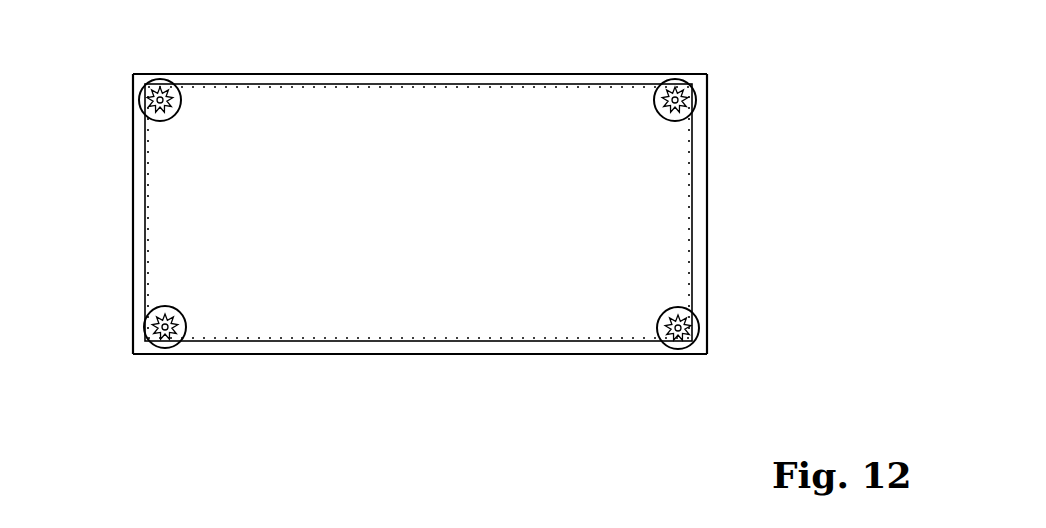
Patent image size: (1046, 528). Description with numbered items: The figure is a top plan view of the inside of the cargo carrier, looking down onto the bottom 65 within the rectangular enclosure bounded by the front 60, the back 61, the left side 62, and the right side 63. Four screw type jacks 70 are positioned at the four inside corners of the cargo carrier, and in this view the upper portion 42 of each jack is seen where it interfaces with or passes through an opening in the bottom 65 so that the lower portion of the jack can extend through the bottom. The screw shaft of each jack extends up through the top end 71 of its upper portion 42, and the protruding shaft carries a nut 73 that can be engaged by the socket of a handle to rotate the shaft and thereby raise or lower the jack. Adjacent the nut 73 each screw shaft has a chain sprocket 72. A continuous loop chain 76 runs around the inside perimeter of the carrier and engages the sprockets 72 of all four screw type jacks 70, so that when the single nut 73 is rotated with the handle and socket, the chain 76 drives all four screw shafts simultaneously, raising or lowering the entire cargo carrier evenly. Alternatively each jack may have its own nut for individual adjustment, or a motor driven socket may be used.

The upper portion 42 is at (172, 122).
The front 60 is at (398, 355).
The back 61 is at (408, 73).
The left side 62 is at (133, 212).
The right side 63 is at (707, 208).
The bottom 65 is at (432, 215).
The screw type jack 70 is at (193, 128).
The top end 71 is at (160, 79).
The chain sprocket 72 is at (146, 100).
The nut 73 is at (180, 85).
The continuous loop chain 76 is at (347, 90).